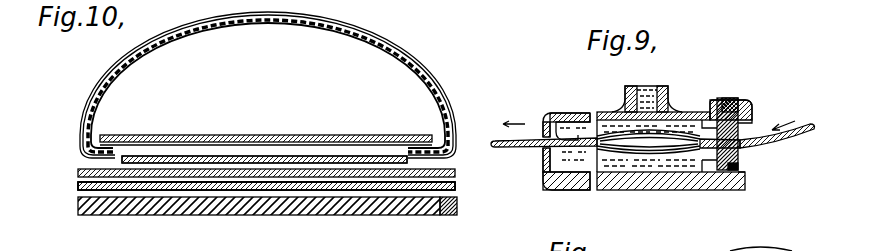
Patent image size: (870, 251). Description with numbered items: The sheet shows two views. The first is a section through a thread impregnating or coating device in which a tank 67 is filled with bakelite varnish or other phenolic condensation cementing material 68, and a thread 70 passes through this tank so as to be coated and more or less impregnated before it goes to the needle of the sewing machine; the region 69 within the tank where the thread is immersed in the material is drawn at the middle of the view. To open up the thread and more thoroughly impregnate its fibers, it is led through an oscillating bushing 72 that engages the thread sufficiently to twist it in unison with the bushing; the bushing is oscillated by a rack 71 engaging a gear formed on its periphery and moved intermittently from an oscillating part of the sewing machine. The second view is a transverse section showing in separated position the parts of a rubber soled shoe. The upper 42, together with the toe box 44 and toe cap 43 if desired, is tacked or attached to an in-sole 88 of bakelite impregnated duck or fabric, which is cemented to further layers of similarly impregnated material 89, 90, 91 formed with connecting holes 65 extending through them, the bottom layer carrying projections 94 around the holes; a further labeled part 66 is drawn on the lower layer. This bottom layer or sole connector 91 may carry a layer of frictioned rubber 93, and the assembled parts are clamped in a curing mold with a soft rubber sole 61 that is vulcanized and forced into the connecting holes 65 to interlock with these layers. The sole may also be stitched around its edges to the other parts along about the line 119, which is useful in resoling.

In FIG. 10, the upper 42 is at (380, 62).
In FIG. 10, the toe cap 43 is at (403, 53).
In FIG. 10, the toe box 44 is at (413, 72).
In FIG. 10, the sole 61 is at (348, 212).
In FIG. 10, the connecting holes 65 is at (320, 162).
In FIG. 10, the lower plate 66 is at (394, 195).
In FIG. 9, the tank 67 is at (607, 110).
In FIG. 9, the phenolic condensation cementing material 68 is at (678, 130).
In FIG. 9, the wire bulge 69 is at (660, 145).
In FIG. 9, the thread 70 is at (653, 125).
In FIG. 9, the rack 71 is at (735, 110).
In FIG. 9, the oscillating bushing 72 is at (738, 160).
In FIG. 10, the in-sole 88 is at (207, 140).
In FIG. 10, the layer of impregnated material 89 is at (230, 157).
In FIG. 10, the layer of impregnated material 90 is at (200, 175).
In FIG. 10, the sole connector 91 is at (238, 187).
In FIG. 10, the layer of frictioned rubber 93 is at (128, 190).
In FIG. 10, the projections 94 is at (293, 190).
In FIG. 10, the stitching line 119 is at (442, 215).